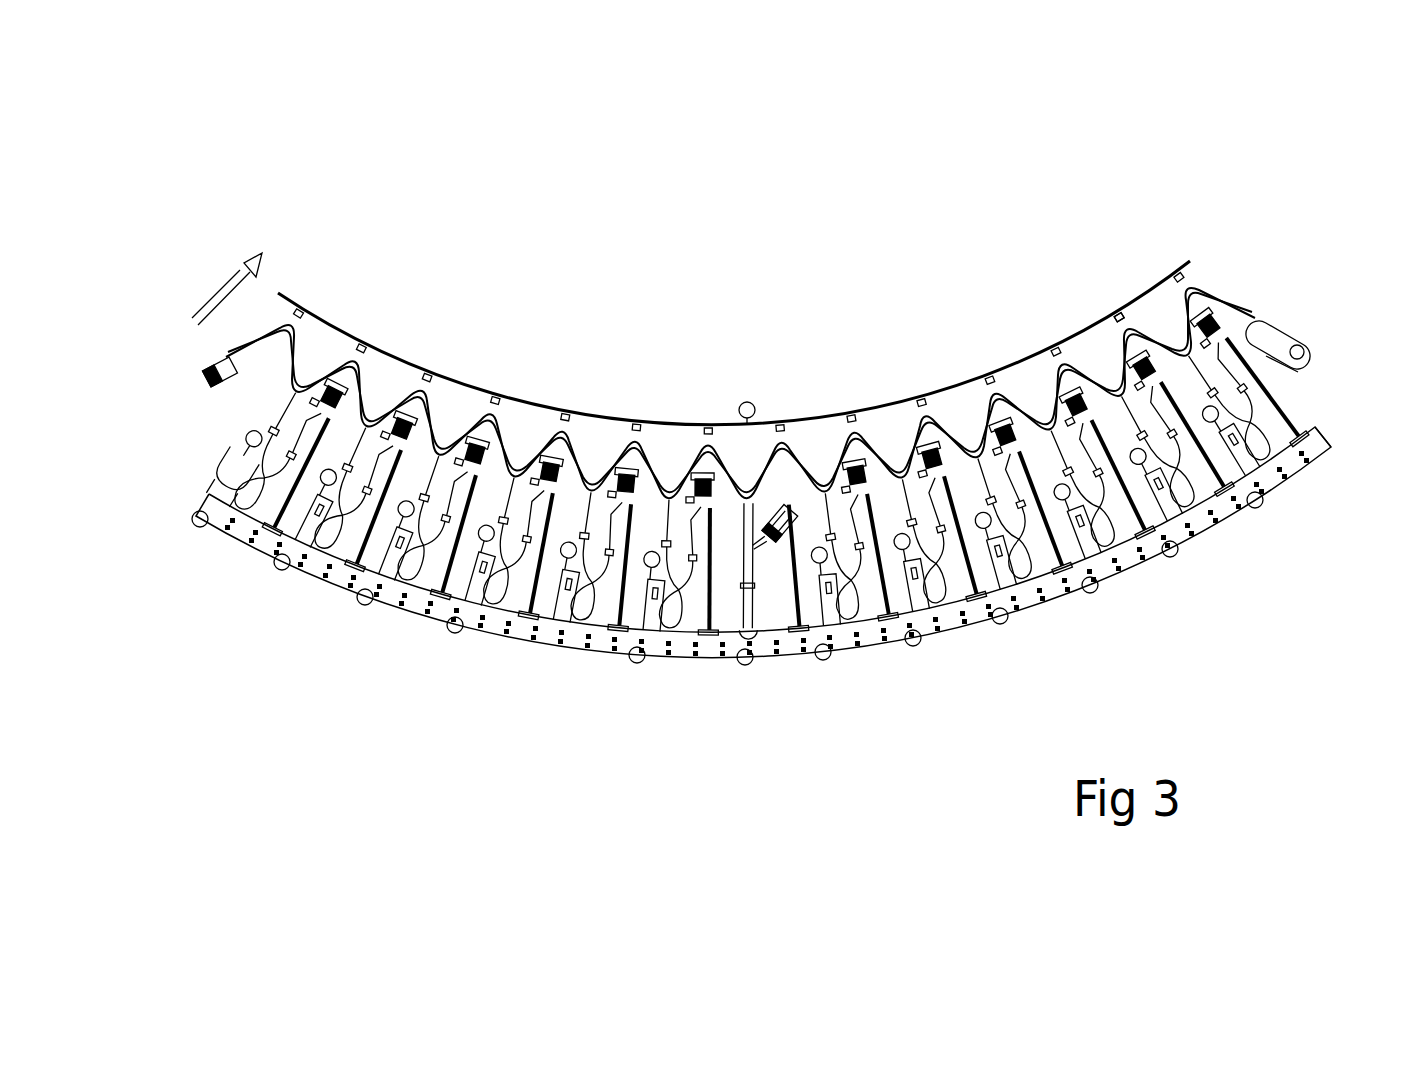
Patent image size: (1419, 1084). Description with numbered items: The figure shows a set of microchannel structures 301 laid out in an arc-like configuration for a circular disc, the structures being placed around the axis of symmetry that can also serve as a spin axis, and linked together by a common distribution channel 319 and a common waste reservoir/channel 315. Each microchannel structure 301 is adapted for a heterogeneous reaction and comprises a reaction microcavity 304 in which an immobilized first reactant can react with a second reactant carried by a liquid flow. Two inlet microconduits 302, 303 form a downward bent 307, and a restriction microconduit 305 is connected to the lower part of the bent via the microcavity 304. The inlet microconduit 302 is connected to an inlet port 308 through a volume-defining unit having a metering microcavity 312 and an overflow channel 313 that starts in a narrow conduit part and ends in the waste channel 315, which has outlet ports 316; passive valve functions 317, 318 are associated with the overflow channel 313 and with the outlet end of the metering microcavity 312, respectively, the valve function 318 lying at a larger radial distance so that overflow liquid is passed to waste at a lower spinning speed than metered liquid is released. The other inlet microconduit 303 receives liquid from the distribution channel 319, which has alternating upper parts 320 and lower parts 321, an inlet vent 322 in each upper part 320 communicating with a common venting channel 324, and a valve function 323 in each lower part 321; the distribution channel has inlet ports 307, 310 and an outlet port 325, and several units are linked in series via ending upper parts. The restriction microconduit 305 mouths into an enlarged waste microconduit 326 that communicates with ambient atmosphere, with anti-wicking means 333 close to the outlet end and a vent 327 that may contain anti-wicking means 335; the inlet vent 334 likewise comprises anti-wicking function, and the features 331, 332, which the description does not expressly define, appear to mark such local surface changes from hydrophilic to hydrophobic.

The microchannel structure 301 is at (1262, 325).
The inlet microconduit 302 is at (1042, 455).
The inlet microconduit 303 is at (263, 425).
The reaction microcavity 304 is at (1200, 483).
The restriction microconduit 305 is at (1168, 556).
The inlet port 307 is at (222, 355).
The inlet port 308 is at (340, 393).
The inlet port 310 is at (785, 505).
The metering microcavity 312 is at (1300, 370).
The overflow channel 313 is at (1352, 437).
The common waste reservoir/channel 315 is at (317, 563).
The outlet port 316 is at (452, 632).
The valve function 317 is at (575, 568).
The valve function 318 is at (897, 615).
The distribution channel 319 is at (540, 437).
The upper part 320 is at (687, 440).
The lower part 321 is at (597, 440).
The inlet vent 322 is at (428, 378).
The valve function 323 is at (558, 545).
The common venting channel 324 is at (357, 348).
The outlet port 325 is at (1260, 330).
The waste microconduit 326 is at (232, 480).
The vent 327 is at (245, 443).
The fastening element 331 is at (1130, 318).
The fastening element 332 is at (1119, 317).
The anti-wicking means 333 is at (323, 495).
The inlet vent 334 is at (300, 308).
The anti-wicking means 335 is at (265, 485).